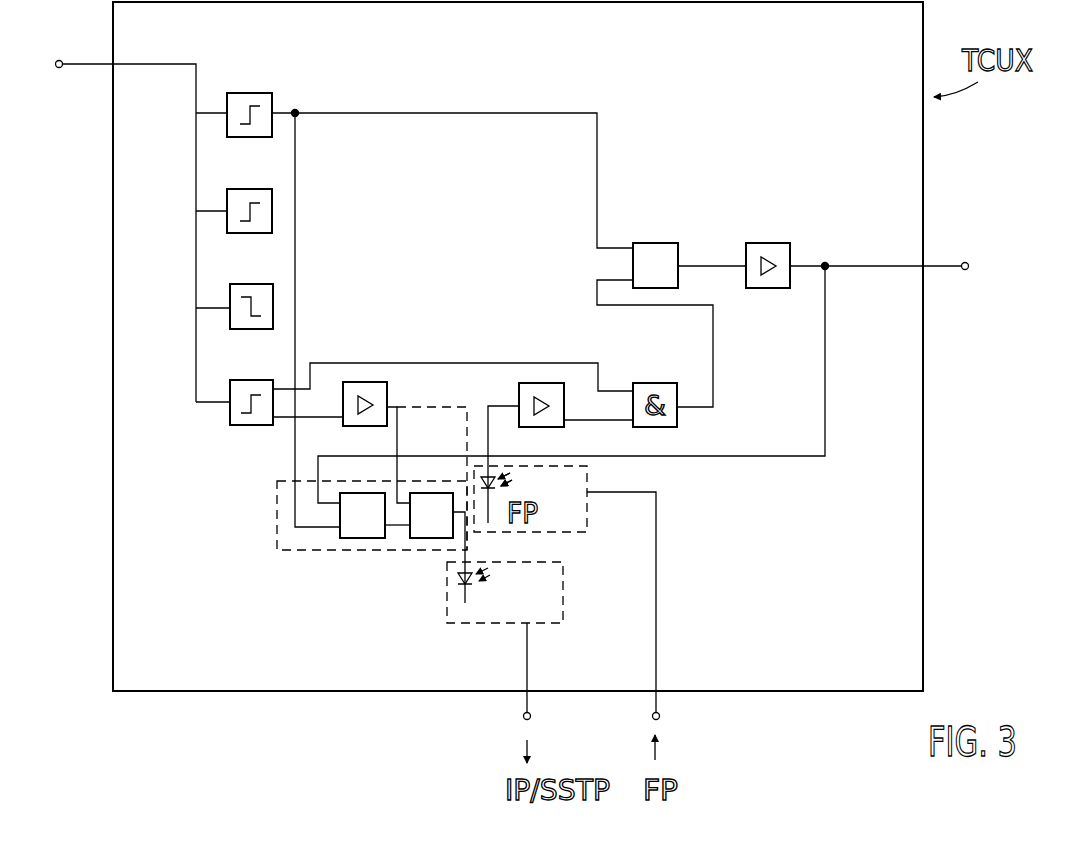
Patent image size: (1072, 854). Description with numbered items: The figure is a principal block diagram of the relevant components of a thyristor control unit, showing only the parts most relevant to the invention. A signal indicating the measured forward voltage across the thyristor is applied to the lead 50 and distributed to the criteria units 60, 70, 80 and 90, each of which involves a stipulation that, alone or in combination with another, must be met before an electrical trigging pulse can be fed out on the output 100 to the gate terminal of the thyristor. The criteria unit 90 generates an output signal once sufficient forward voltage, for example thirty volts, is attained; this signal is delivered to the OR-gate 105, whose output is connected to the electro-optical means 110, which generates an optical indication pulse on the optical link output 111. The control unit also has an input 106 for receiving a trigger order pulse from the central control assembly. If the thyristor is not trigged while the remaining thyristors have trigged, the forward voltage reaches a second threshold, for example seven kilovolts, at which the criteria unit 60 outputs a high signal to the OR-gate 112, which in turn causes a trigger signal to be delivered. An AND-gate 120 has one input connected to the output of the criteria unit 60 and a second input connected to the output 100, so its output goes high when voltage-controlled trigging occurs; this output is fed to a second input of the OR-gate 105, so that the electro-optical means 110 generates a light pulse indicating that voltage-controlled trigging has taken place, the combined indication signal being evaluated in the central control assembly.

The lead 50 is at (127, 66).
The criteria unit 60 is at (272, 74).
The criteria unit 70 is at (241, 189).
The criteria unit 80 is at (243, 284).
The criteria unit 90 is at (242, 380).
The output 100 is at (941, 264).
The OR-gate 105 is at (415, 540).
The input 106 is at (660, 715).
The electro-optical means 110 is at (595, 617).
The optical link output 111 is at (531, 715).
The OR-gate 112 is at (660, 243).
The AND-gate 120 is at (352, 540).